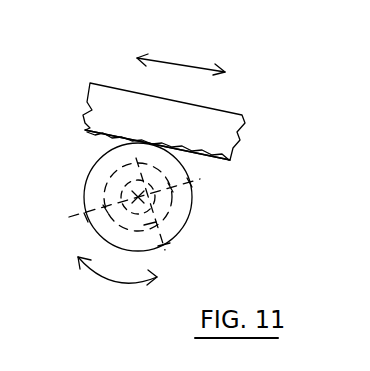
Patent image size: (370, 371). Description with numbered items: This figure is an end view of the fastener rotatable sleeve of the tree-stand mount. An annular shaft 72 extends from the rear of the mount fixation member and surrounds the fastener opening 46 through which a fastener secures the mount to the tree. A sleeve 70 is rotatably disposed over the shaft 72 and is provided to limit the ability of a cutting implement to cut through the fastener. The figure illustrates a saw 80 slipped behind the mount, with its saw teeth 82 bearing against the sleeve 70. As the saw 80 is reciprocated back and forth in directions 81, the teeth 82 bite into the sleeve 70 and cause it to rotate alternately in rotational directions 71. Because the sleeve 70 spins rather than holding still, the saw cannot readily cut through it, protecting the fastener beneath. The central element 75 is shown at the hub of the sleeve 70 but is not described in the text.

The saw 80 is at (115, 97).
The reciprocating directions 81 is at (173, 62).
The saw teeth 82 is at (93, 132).
The sleeve 70 is at (188, 217).
The fastener opening 46 is at (198, 182).
The shaft 72 is at (72, 217).
The hub 75 is at (173, 260).
The rotational directions 71 is at (112, 283).